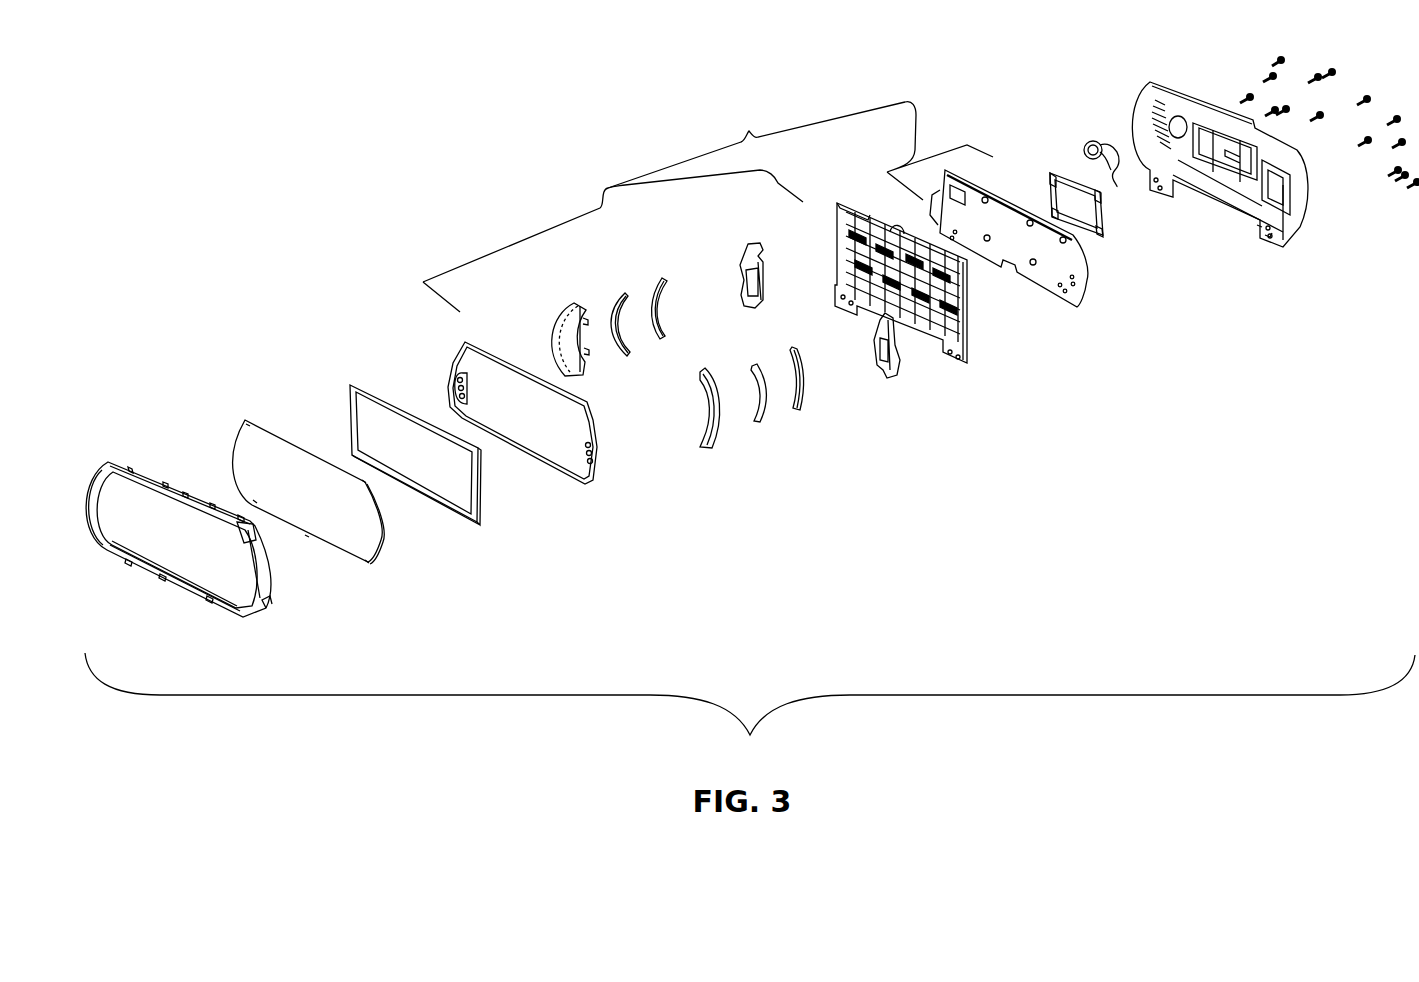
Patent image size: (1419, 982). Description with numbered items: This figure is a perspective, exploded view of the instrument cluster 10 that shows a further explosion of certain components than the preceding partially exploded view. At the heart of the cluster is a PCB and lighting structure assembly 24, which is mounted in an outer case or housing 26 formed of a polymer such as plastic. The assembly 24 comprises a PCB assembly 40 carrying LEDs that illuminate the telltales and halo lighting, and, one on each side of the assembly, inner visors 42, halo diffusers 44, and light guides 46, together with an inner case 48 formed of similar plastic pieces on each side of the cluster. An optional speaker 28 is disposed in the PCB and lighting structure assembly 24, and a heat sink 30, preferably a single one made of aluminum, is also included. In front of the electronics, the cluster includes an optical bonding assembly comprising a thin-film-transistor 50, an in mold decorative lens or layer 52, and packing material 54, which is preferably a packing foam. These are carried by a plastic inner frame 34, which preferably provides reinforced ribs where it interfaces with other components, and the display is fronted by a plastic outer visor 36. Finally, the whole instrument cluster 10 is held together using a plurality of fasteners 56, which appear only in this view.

The instrument cluster 10 is at (750, 712).
The PCB and lighting structure assembly 24 is at (708, 207).
The outer case 26 is at (1292, 262).
The speaker 28 is at (1133, 192).
The heat sink 30 is at (1106, 252).
The inner frame 34 is at (973, 366).
The outer visor 36 is at (275, 608).
The PCB assembly 40 is at (1070, 318).
The inner visor 42 is at (540, 330).
The halo diffuser 44 is at (630, 338).
The light guide 46 is at (672, 305).
The inner case 48 is at (743, 247).
The thin-film-transistor 50 is at (488, 520).
The in mold decorative lens 52 is at (376, 560).
The packing material 54 is at (586, 492).
The fasteners 56 is at (1383, 208).